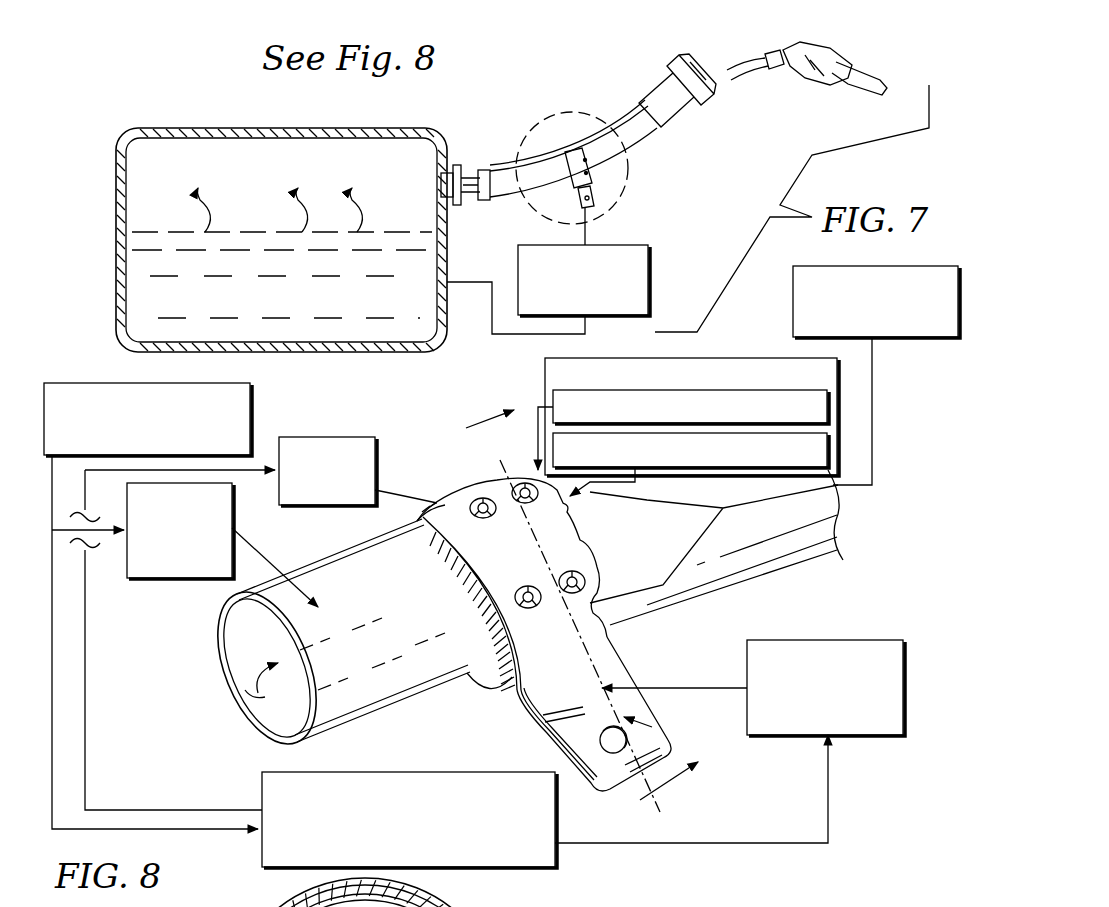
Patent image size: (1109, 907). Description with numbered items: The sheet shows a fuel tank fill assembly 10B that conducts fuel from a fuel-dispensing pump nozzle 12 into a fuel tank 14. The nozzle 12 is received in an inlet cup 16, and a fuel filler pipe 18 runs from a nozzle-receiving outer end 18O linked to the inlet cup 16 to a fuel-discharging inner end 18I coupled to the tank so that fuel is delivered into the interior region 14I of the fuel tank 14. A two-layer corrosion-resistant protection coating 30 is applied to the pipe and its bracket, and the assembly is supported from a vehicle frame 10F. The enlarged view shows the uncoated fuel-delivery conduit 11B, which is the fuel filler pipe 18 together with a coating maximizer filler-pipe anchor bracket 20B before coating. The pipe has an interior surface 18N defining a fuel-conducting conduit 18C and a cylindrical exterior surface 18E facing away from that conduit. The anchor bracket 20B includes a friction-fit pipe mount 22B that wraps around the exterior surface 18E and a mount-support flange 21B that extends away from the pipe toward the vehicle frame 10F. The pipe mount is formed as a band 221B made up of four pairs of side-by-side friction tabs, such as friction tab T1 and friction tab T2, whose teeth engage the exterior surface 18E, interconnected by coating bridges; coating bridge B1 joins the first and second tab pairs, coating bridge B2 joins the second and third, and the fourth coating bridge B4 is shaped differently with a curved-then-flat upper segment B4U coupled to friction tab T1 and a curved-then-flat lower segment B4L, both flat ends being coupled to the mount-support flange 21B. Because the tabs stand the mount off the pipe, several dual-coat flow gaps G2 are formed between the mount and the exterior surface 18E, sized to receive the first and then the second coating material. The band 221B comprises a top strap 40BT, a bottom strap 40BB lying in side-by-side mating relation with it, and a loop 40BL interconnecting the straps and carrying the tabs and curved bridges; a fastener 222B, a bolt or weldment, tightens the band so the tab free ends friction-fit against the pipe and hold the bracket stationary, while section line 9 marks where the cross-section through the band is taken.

In FIG. 7, the fuel tank 14 is at (245, 126).
In FIG. 7, the interior region 14I is at (178, 182).
In FIG. 7, the fuel-discharging inner end 18I is at (470, 165).
In FIG. 7, the fuel filler pipe 18 is at (620, 125).
In FIG. 8, the fuel filler pipe 18 is at (160, 578).
In FIG. 7, the inlet cup 16 is at (633, 92).
In FIG. 7, the two-layer corrosion-resistant protection coating 30 is at (653, 82).
In FIG. 7, the coating maximizer filler-pipe anchor bracket 20B is at (558, 147).
In FIG. 8, the coating maximizer filler-pipe anchor bracket 20B is at (262, 786).
In FIG. 7, the fuel tank fill assembly 10B is at (583, 40).
In FIG. 7, the nozzle-receiving outer end 18O is at (648, 138).
In FIG. 7, the fuel-dispensing pump nozzle 12 is at (862, 50).
In FIG. 7, the vehicle frame 10F is at (518, 262).
In FIG. 8, the uncoated fuel-delivery conduit 11B is at (80, 383).
In FIG. 8, the friction-fit pipe mount 22B is at (334, 437).
In FIG. 8, the fuel-conducting conduit 18C is at (292, 668).
In FIG. 8, the interior surface 18N is at (268, 695).
In FIG. 8, the band 221B is at (545, 380).
In FIG. 8, the section line 9- 9 is at (574, 621).
In FIG. 8, the coating bridge B2 is at (418, 508).
In FIG. 8, the friction tab T2 is at (447, 500).
In FIG. 8, the loop 40BL is at (485, 487).
In FIG. 8, the coating bridge B1 is at (533, 557).
In FIG. 8, the friction tab T1 is at (598, 580).
In FIG. 8, the dual-coat flow gap G2 is at (895, 340).
In FIG. 8, the top strap 40BT is at (494, 652).
In FIG. 8, the exterior surface 18E is at (410, 690).
In FIG. 8, the bottom strap 40BB is at (547, 733).
In FIG. 8, the lower segment B4L is at (606, 668).
In FIG. 8, the upper segment B4U is at (687, 652).
In FIG. 8, the coating bridge B4 is at (696, 644).
In FIG. 8, the mount-support flange 21B is at (862, 640).
In FIG. 8, the fastener 222B is at (660, 727).